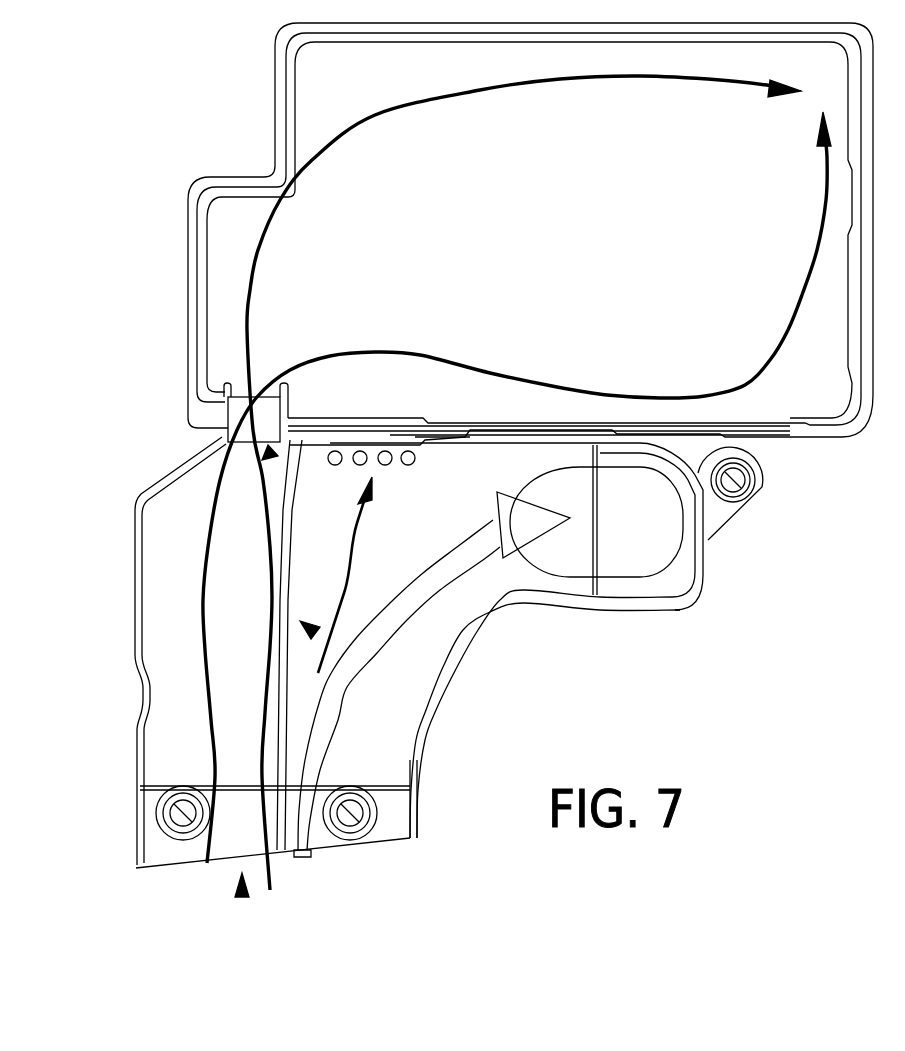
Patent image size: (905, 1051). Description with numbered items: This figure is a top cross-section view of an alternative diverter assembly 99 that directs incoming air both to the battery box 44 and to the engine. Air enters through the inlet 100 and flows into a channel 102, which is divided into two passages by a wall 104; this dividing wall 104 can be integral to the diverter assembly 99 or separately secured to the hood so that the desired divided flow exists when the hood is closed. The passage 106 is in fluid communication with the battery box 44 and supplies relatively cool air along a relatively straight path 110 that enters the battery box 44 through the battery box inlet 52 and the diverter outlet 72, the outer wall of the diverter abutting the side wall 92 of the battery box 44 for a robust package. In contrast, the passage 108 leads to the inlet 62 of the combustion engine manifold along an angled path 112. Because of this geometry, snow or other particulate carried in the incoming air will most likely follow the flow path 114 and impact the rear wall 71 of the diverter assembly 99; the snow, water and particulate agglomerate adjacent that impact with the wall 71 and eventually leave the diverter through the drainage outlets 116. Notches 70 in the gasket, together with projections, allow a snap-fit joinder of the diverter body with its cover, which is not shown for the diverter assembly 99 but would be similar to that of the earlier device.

The battery box 44 is at (568, 202).
The orifice 52 is at (238, 398).
The inlet 62 is at (653, 532).
The notches 70 is at (565, 445).
The rear wall 71 is at (423, 440).
The diverter outlet 72 is at (270, 455).
The side wall 92 is at (483, 420).
The diverter assembly 99 is at (125, 510).
The inlet 100 is at (240, 890).
The channel 102 is at (308, 627).
The wall 104 is at (285, 742).
The passage 106 is at (163, 610).
The passage 108 is at (395, 697).
The straight path 110 is at (222, 455).
The angled path 112 is at (454, 552).
The flow path 114 is at (357, 524).
The drainage outlets 116 is at (408, 451).